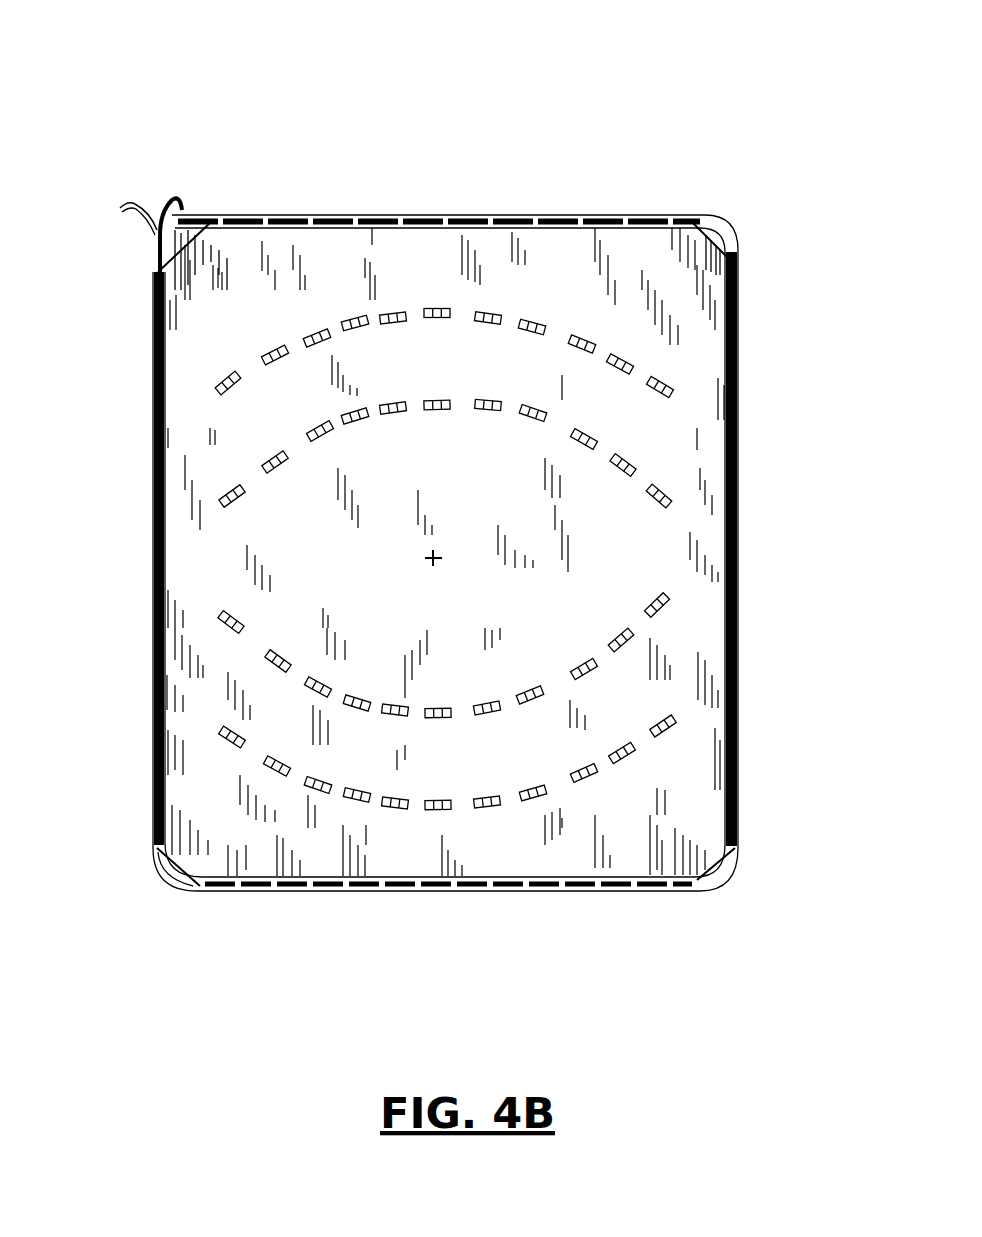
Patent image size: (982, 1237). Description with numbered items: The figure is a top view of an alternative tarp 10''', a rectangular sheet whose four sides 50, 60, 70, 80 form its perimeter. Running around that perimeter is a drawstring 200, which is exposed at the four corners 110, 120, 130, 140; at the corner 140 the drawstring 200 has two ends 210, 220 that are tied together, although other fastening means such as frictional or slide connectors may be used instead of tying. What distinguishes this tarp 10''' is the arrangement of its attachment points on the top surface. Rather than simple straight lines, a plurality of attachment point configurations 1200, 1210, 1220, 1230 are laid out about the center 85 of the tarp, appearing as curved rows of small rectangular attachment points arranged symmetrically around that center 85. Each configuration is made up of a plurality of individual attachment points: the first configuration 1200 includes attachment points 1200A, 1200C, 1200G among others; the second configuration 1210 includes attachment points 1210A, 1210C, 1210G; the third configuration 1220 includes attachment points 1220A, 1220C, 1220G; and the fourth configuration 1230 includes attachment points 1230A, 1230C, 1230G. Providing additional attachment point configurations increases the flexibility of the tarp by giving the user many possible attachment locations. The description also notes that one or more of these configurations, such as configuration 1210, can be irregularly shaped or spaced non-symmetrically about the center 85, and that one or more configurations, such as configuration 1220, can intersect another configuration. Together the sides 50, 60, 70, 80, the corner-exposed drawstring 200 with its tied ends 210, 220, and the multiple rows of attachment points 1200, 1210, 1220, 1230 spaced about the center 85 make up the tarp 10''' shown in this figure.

The tarp 10''' is at (443, 496).
The side 50 is at (489, 217).
The side 60 is at (740, 534).
The side 70 is at (548, 891).
The side 80 is at (152, 518).
The center 85 is at (440, 557).
The corner 110 is at (730, 223).
The corner 120 is at (732, 850).
The corner 130 is at (172, 893).
The corner 140 is at (193, 228).
The drawstring 200 is at (155, 878).
The end 210 is at (177, 197).
The end 220 is at (148, 241).
The attachment point configuration 1200 is at (603, 349).
The attachment point 1200A is at (222, 375).
The attachment point 1200C is at (332, 342).
The attachment point 1200G is at (490, 313).
The attachment point configuration 1210 is at (565, 423).
The attachment point 1210A is at (228, 492).
The attachment point 1210C is at (322, 436).
The attachment point 1210G is at (488, 400).
The attachment point configuration 1220 is at (598, 661).
The attachment point 1220A is at (237, 617).
The attachment point 1220C is at (320, 682).
The attachment point 1220G is at (488, 701).
The attachment point configuration 1230 is at (567, 790).
The attachment point 1230A is at (226, 732).
The attachment point 1230C is at (321, 783).
The attachment point 1230G is at (491, 797).